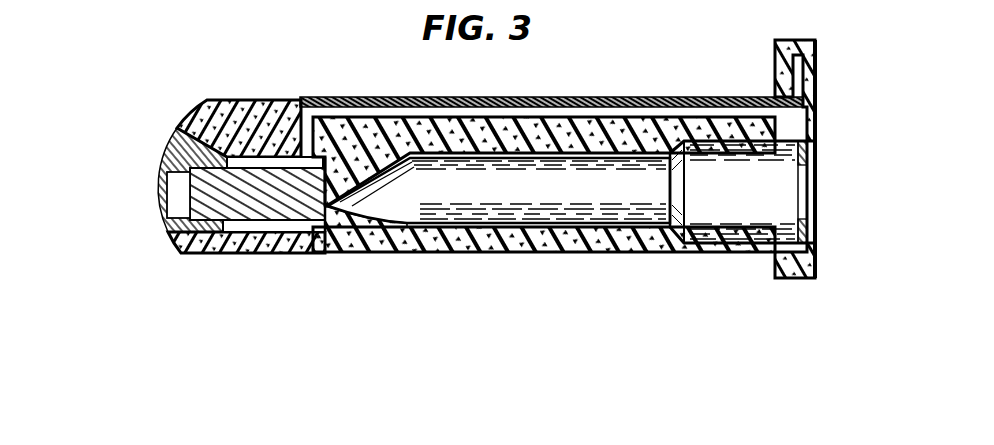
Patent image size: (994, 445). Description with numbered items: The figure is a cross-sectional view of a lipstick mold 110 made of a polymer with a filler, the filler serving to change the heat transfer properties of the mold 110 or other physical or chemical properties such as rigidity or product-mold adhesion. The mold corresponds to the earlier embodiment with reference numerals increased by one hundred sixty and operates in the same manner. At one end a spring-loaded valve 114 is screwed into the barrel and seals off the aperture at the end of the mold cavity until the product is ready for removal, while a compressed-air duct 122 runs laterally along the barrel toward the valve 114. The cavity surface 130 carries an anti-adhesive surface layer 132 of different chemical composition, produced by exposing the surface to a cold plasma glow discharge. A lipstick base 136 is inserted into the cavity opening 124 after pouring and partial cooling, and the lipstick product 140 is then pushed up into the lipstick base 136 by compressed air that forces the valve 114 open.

The lipstick mold 110 is at (557, 270).
The spring-loaded valve 114 is at (200, 193).
The compressed-air duct 122 is at (813, 56).
The cavity opening 124 is at (813, 130).
The cavity surface 130 is at (505, 250).
The anti-adhesive surface layer 132 is at (616, 227).
The lipstick base 136 is at (803, 222).
The lipstick product 140 is at (402, 196).